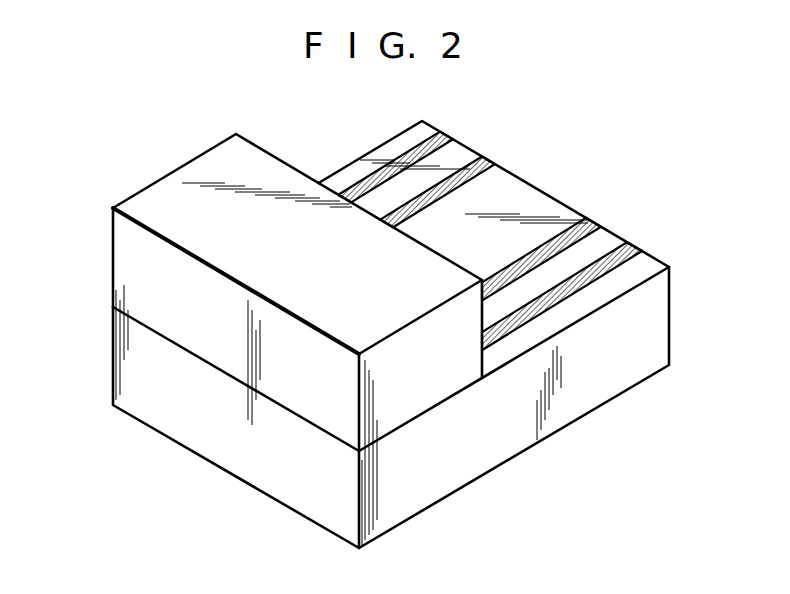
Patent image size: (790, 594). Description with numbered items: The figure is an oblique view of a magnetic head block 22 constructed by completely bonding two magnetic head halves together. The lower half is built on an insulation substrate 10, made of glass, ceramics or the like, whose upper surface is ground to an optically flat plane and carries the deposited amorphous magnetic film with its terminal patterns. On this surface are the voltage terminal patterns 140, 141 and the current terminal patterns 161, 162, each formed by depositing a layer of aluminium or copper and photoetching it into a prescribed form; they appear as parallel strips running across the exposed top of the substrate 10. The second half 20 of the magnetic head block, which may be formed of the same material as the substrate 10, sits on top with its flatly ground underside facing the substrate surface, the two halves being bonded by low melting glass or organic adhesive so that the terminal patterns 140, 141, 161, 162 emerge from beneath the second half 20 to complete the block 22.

The insulation substrate 10 is at (503, 433).
The second half of the magnetic head block 20 is at (127, 275).
The magnetic head block 22 is at (209, 111).
The voltage terminal pattern 140 is at (642, 252).
The voltage terminal pattern 141 is at (495, 165).
The current terminal pattern 161 is at (450, 142).
The current terminal pattern 162 is at (598, 228).